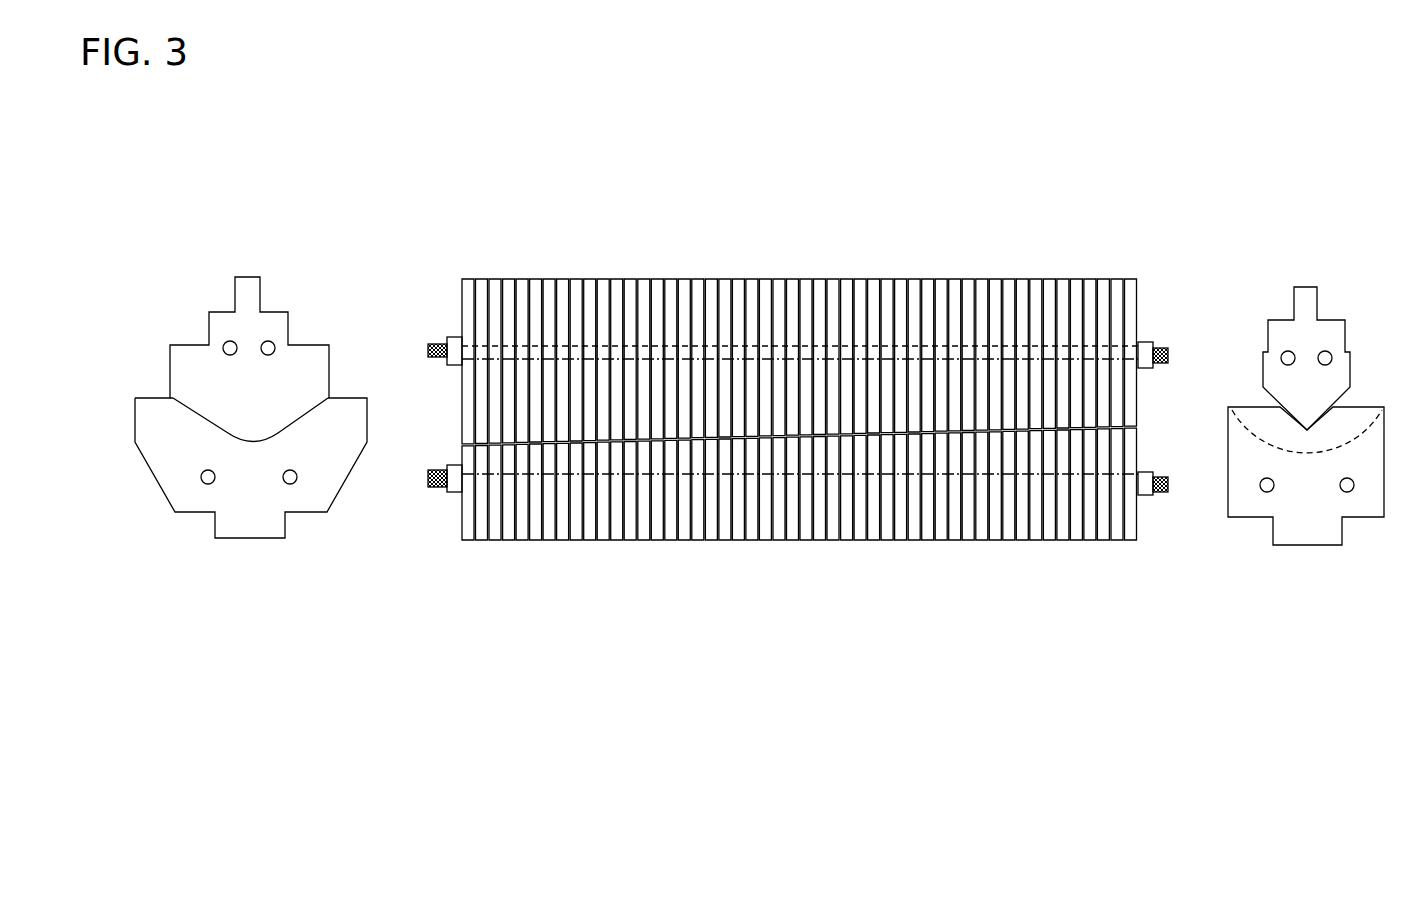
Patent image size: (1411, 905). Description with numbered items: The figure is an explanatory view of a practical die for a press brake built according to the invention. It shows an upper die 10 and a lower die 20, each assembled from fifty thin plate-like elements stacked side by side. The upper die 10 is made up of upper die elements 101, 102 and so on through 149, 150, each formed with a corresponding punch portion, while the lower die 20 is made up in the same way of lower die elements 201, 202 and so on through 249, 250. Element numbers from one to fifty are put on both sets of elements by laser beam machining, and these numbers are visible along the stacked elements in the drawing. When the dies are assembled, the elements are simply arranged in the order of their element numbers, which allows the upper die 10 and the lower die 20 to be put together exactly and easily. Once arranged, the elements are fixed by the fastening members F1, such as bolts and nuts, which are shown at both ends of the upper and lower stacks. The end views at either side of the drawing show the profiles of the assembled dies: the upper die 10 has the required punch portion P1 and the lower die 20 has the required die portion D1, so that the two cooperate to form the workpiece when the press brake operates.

The upper die 10 is at (779, 270).
The lower die 20 is at (800, 560).
The die portion D1 is at (197, 415).
The punch portion P1 is at (282, 447).
The fastening members F1 is at (431, 345).
The upper die element 101 is at (468, 279).
The upper die element 102 is at (482, 278).
The upper die element 149 is at (1115, 300).
The upper die element 150 is at (1133, 290).
The lower die element 201 is at (470, 527).
The lower die element 202 is at (483, 528).
The lower die element 249 is at (1117, 530).
The lower die element 250 is at (1127, 538).